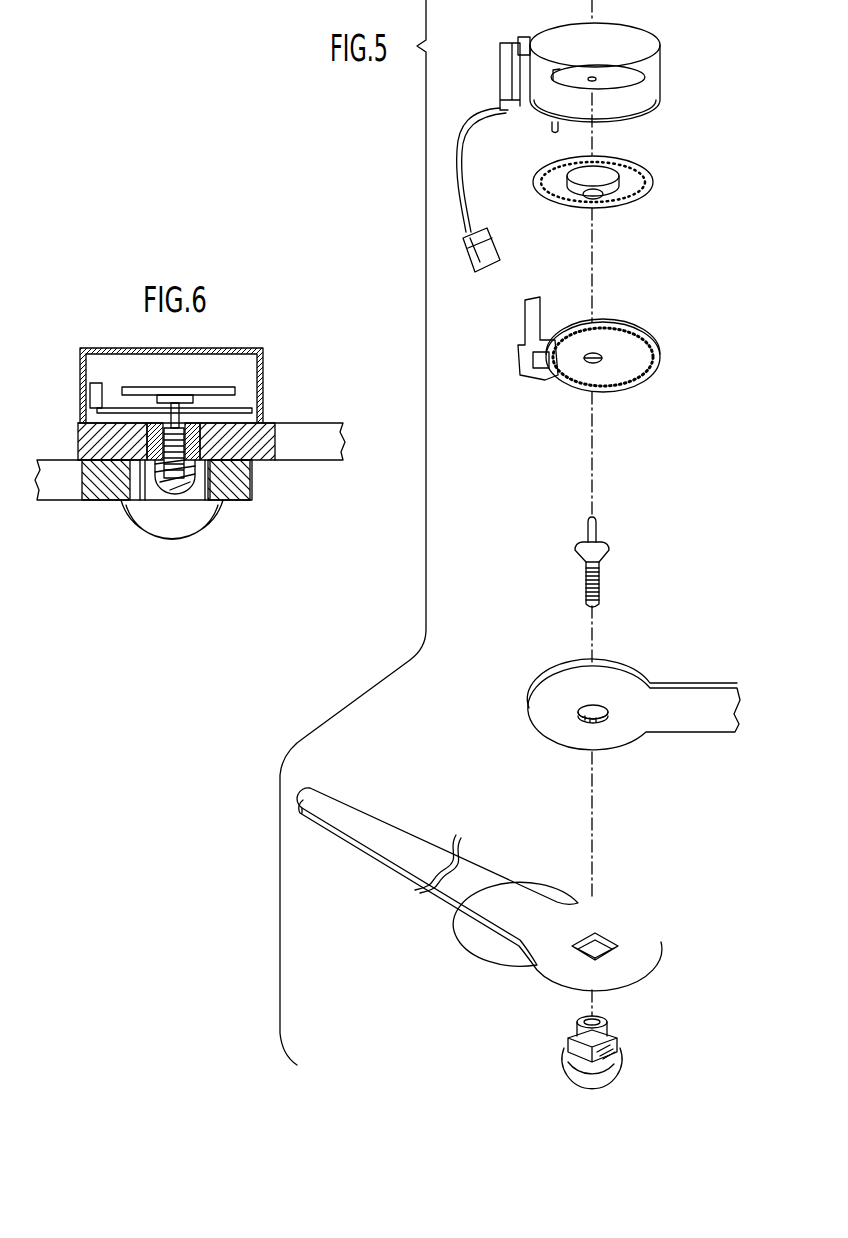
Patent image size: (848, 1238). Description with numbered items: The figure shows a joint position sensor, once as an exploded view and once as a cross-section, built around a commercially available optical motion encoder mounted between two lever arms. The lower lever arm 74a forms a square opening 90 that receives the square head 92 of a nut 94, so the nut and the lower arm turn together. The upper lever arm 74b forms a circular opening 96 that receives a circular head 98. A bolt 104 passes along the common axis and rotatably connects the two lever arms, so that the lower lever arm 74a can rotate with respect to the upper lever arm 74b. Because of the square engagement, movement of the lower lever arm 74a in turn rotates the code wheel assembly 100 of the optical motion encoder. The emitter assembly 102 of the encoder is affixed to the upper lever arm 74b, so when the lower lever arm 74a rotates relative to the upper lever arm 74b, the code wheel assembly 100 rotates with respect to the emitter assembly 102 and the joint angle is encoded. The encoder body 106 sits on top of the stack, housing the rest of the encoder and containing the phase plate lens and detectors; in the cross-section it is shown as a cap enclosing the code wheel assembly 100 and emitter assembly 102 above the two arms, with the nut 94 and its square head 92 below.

In FIG. 5, the lower lever arm 74a is at (503, 889).
In FIG. 6, the lower lever arm 74a is at (68, 490).
In FIG. 5, the upper lever arm 74b is at (627, 715).
In FIG. 6, the upper lever arm 74b is at (290, 462).
In FIG. 5, the square opening 90 is at (618, 945).
In FIG. 5, the square head 92 is at (594, 1043).
In FIG. 6, the square head 92 is at (205, 503).
In FIG. 5, the nut 94 is at (600, 1080).
In FIG. 6, the nut 94 is at (200, 537).
In FIG. 5, the circular opening 96 is at (592, 718).
In FIG. 5, the circular head 98 is at (580, 1022).
In FIG. 6, the circular head 98 is at (160, 450).
In FIG. 5, the code wheel assembly 100 is at (648, 188).
In FIG. 6, the code wheel assembly 100 is at (235, 391).
In FIG. 5, the emitter assembly 102 is at (652, 334).
In FIG. 6, the emitter assembly 102 is at (252, 410).
In FIG. 5, the bolt 104 is at (603, 585).
In FIG. 6, the bolt 104 is at (228, 450).
In FIG. 5, the encoder body 106 is at (662, 79).
In FIG. 6, the encoder body 106 is at (258, 348).